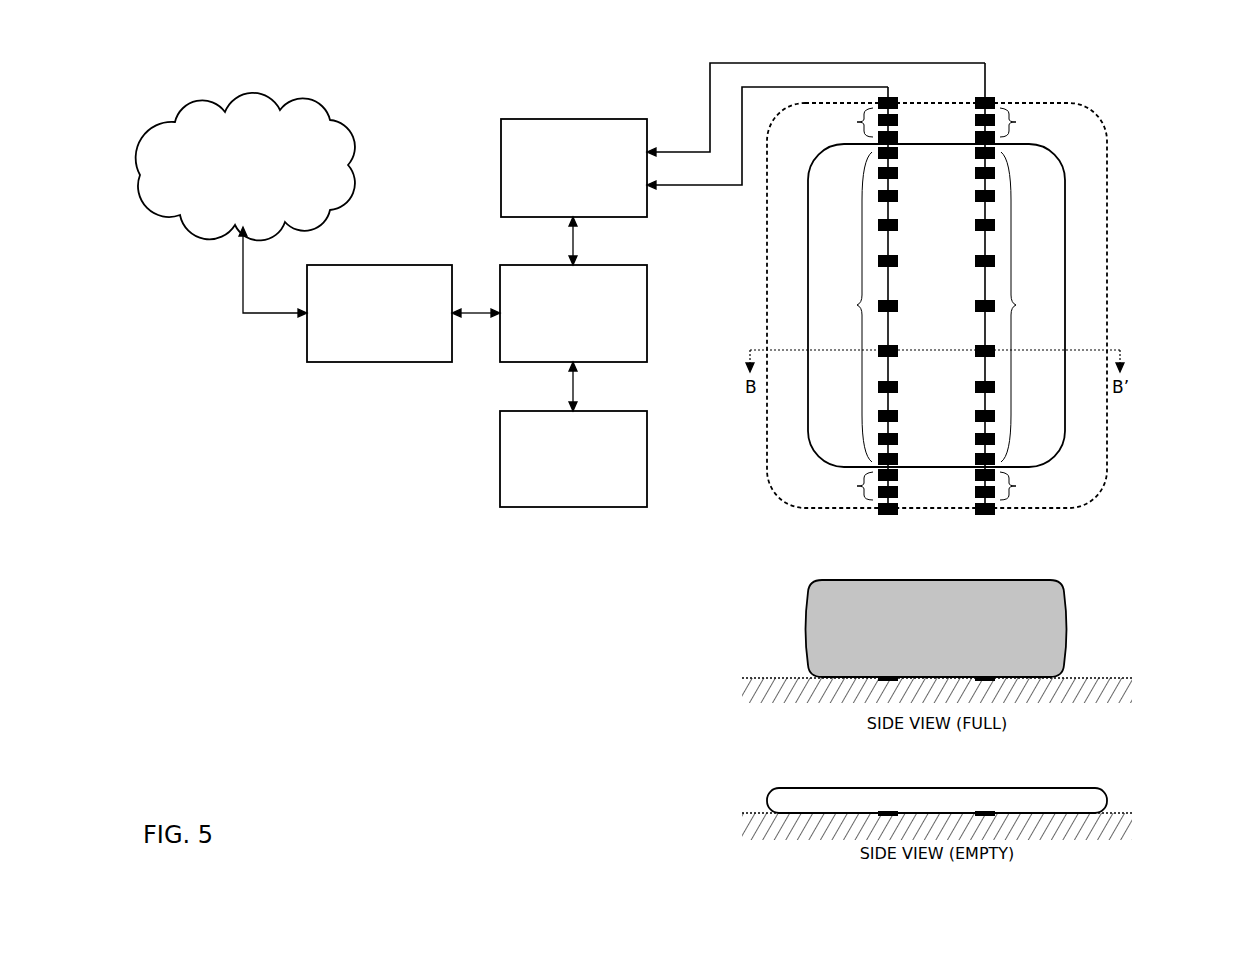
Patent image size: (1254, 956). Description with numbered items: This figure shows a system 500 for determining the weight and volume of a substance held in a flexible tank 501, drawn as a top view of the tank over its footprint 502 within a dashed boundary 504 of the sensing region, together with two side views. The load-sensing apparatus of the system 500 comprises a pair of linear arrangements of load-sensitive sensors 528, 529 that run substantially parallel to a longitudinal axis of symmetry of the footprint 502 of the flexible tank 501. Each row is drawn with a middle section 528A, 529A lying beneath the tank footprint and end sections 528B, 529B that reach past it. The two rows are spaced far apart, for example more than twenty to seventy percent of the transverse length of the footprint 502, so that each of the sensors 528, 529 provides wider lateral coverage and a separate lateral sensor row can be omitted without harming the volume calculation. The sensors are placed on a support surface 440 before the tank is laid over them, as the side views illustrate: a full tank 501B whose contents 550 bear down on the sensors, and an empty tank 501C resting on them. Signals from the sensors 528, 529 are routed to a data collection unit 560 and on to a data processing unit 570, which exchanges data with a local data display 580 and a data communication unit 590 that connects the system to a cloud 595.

The system 500 is at (1172, 107).
The flexible tank 501 is at (937, 167).
The bag (full side view) 501B is at (937, 628).
The bag (empty side view) 501C is at (937, 801).
The footprint 502 is at (1066, 184).
The sensing mat 504 is at (1107, 265).
The linear arrangement of load-sensitive sensors 528 is at (882, 512).
The first electrode strip middle section 528A is at (840, 307).
The first electrode strip end sections 528B is at (840, 304).
The linear arrangement of load-sensitive sensors 529 is at (991, 512).
The second electrode strip middle section 529A is at (1032, 307).
The second electrode strip end sections 529B is at (1032, 304).
The fluid contents 550 is at (1043, 595).
The support surface 440 is at (748, 690).
The data collection unit 560 is at (574, 168).
The data processing unit 570 is at (573, 313).
The local data display 580 is at (573, 459).
The data communication unit 590 is at (379, 313).
The cloud 595 is at (245, 166).